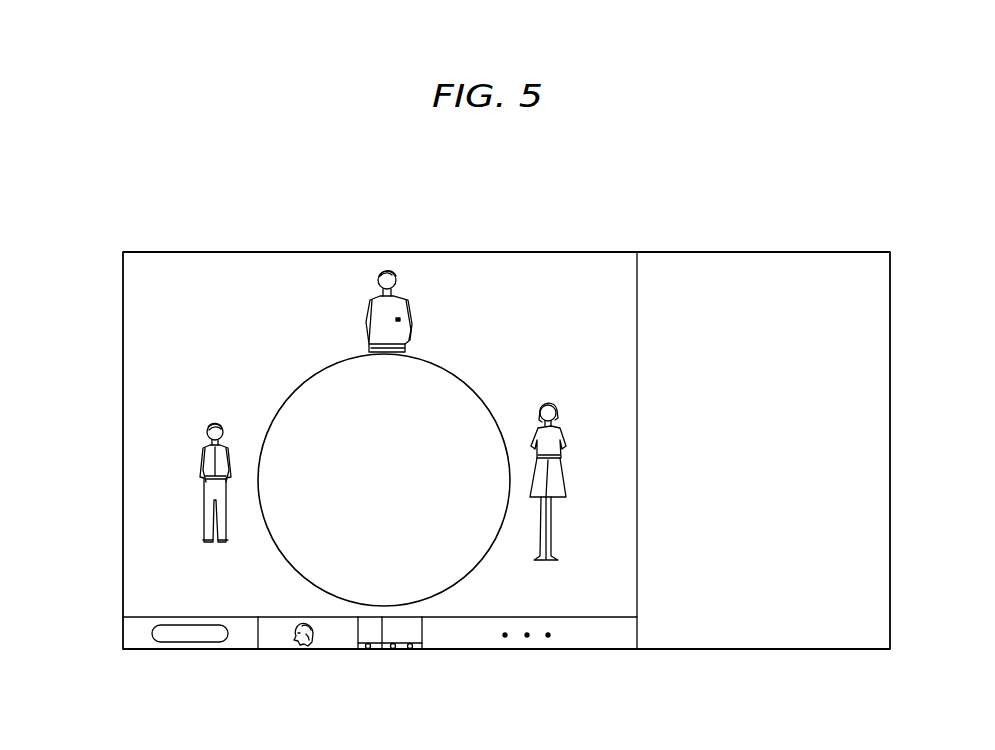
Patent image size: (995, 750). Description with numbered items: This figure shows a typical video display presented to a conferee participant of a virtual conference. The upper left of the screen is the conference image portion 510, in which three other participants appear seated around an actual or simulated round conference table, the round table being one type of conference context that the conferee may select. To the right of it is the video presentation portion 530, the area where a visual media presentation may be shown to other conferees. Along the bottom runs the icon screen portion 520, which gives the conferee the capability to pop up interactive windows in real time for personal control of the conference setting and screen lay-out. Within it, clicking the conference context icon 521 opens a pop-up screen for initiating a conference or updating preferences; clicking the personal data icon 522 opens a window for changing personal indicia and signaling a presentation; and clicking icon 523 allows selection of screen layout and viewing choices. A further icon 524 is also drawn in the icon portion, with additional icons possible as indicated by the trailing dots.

The conference image portion 510 is at (525, 252).
The video presentation portion 530 is at (807, 252).
The icon screen portion 520 is at (123, 632).
The conference context icon 521 is at (197, 650).
The personal data icon 522 is at (299, 616).
The screen layout icon 523 is at (408, 617).
The additional options indicator 524 is at (557, 650).